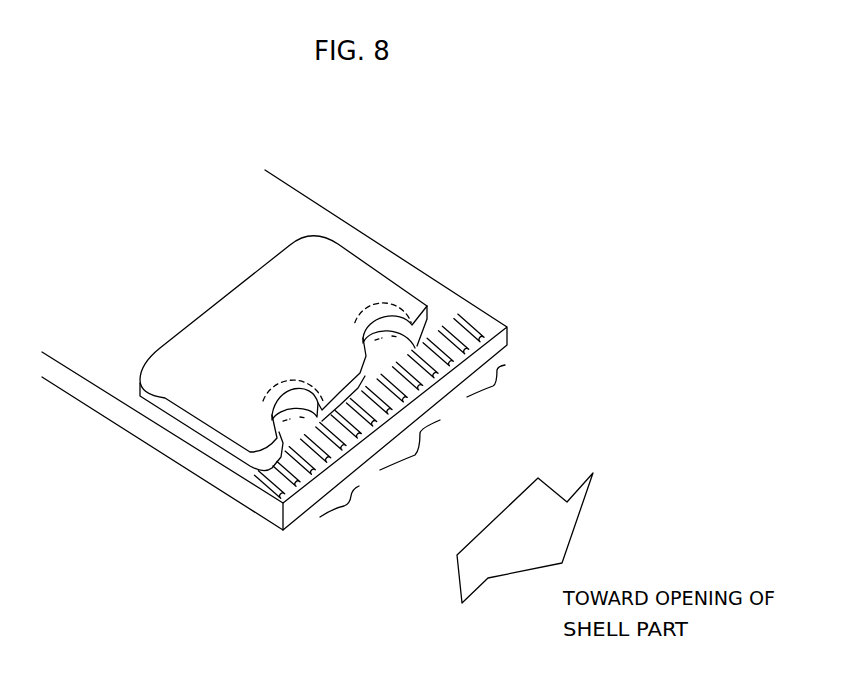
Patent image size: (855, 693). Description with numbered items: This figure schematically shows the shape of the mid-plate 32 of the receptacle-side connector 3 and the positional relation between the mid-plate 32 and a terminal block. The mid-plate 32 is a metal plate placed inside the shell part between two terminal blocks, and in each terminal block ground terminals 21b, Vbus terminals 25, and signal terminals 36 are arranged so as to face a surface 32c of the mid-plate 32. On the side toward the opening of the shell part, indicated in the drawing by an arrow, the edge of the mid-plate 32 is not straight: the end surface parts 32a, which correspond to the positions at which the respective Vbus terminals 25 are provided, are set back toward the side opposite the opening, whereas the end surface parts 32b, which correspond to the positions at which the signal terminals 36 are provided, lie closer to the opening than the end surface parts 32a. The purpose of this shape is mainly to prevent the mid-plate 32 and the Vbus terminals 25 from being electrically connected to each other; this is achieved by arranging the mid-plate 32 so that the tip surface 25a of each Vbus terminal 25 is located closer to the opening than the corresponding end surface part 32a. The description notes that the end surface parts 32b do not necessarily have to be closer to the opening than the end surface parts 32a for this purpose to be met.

The receptacle-side connector 3 is at (561, 157).
The ground terminal 21b is at (497, 319).
The Vbus terminal 25 is at (319, 402).
The tip surface of the Vbus terminal 25a is at (346, 455).
The mid-plate 32 is at (253, 310).
The end surface part 32a is at (279, 383).
The end surface part 32b is at (344, 385).
The surface of the mid-plate 32c is at (240, 337).
The signal terminal 36 is at (417, 454).